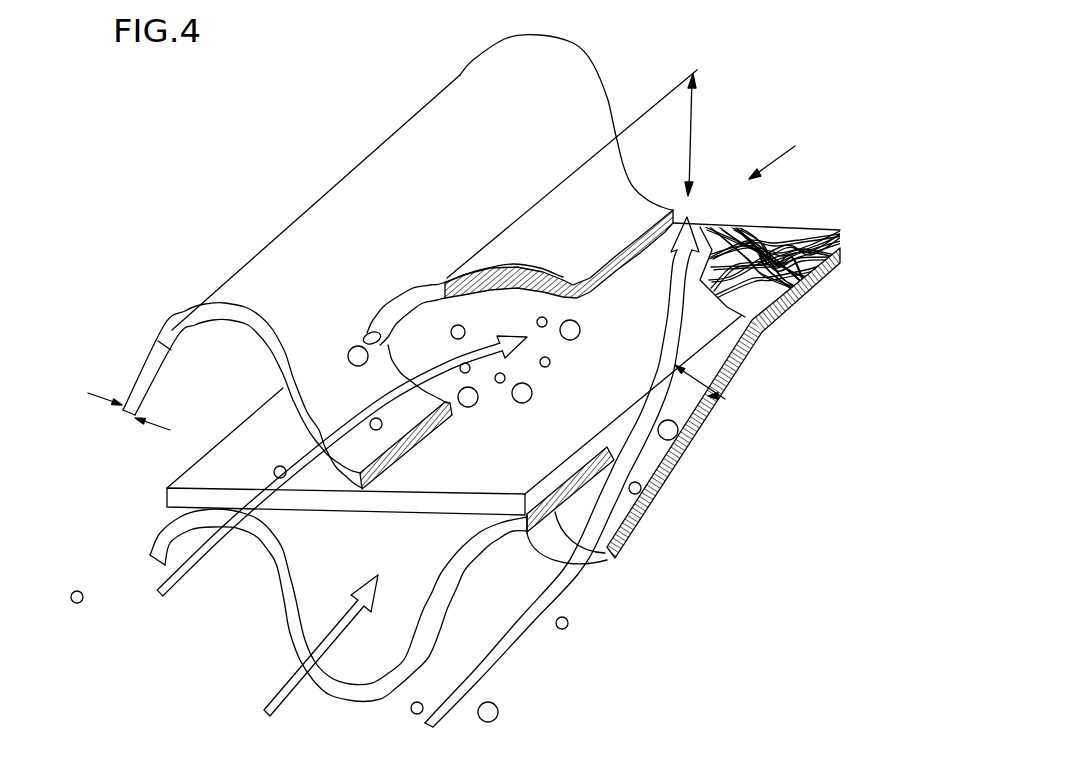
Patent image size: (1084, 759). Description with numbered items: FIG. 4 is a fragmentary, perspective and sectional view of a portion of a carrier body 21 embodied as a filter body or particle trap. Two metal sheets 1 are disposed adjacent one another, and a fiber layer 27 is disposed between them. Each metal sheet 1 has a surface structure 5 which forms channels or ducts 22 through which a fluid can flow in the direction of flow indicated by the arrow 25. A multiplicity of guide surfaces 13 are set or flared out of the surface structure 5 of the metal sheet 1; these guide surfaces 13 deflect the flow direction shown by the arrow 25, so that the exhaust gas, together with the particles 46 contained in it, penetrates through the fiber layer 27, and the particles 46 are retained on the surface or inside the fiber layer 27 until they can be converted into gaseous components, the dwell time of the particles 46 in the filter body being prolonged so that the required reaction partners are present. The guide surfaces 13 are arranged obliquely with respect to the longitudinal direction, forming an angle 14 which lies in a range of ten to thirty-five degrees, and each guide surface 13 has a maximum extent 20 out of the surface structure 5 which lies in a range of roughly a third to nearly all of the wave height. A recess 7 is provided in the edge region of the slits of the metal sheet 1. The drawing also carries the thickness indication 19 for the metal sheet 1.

The metal sheet 1 is at (577, 81).
The surface structure 5 is at (182, 325).
The recess 7 is at (367, 332).
The guide surface 13 is at (530, 277).
The angle 14 is at (692, 410).
The sheet thickness 19 is at (130, 415).
The maximum extent 20 is at (693, 133).
The carrier body 21 is at (791, 149).
The channels or ducts 22 is at (313, 590).
The arrow 25 is at (283, 698).
The fiber layer 27 is at (790, 228).
The particles 46 is at (662, 440).